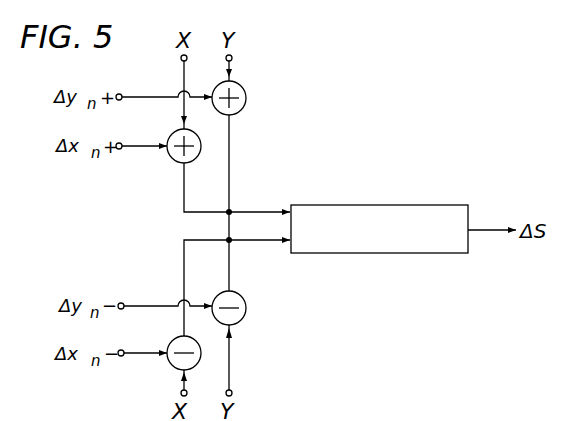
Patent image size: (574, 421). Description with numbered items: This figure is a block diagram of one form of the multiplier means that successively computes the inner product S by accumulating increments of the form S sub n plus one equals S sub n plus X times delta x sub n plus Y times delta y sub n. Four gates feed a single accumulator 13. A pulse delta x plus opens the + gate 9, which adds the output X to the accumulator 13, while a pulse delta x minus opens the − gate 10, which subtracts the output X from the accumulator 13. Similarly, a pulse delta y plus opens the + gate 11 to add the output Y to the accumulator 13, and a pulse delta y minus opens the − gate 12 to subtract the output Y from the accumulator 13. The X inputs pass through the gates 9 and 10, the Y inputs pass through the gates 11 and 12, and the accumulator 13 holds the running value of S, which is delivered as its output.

The + gate 9 is at (176, 161).
The − gate 10 is at (172, 368).
The + gate 11 is at (246, 100).
The − gate 12 is at (242, 320).
The accumulator 13 is at (378, 205).